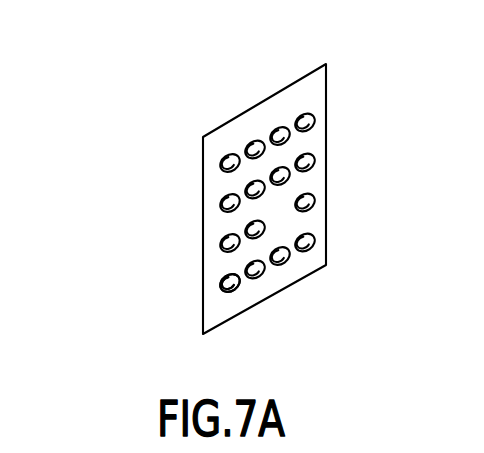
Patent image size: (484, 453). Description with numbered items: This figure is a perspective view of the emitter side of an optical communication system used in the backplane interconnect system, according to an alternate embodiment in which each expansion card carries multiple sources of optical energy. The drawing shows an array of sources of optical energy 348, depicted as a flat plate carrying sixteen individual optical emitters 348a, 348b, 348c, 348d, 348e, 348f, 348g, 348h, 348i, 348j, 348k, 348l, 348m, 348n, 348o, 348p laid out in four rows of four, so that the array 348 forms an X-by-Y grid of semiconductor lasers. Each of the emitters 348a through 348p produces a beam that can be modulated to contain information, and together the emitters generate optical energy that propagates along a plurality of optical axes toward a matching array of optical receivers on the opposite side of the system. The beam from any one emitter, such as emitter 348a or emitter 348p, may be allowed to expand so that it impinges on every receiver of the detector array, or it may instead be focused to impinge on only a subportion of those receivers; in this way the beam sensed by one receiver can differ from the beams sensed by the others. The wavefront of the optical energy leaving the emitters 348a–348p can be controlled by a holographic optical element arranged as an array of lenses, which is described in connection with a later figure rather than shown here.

The array of sources of optical energy 348 is at (303, 80).
The optical emitter 348a is at (223, 157).
The optical emitter 348b is at (249, 146).
The optical emitter 348c is at (278, 130).
The optical emitter 348d is at (303, 115).
The optical emitter 348e is at (220, 203).
The optical emitter 348f is at (245, 190).
The optical emitter 348g is at (296, 152).
The optical emitter 348h is at (308, 160).
The optical emitter 348i is at (220, 247).
The optical emitter 348j is at (220, 242).
The optical emitter 348k is at (301, 230).
The optical emitter 348l is at (313, 195).
The optical emitter 348m is at (220, 285).
The optical emitter 348n is at (250, 280).
The optical emitter 348o is at (270, 262).
The optical emitter 348p is at (294, 256).